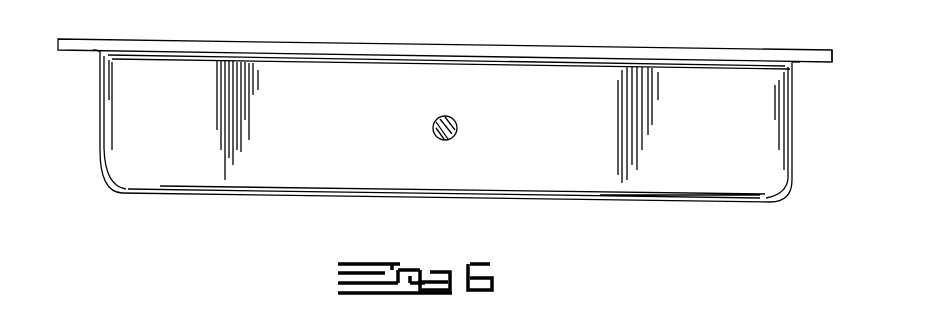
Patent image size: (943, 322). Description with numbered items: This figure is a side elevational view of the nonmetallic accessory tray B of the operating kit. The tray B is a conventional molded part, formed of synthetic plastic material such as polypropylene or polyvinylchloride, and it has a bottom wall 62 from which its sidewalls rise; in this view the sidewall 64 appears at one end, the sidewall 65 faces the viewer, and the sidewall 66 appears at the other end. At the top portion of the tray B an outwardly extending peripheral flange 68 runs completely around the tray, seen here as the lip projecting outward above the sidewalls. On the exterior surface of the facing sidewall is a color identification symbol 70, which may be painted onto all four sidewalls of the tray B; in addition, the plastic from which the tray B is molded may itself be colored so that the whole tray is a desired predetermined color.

The accessory tray B is at (654, 46).
The bottom wall 62 is at (340, 197).
The sidewall 64 is at (100, 105).
The sidewall 65 is at (563, 116).
The sidewall 66 is at (792, 138).
The peripheral flange 68 is at (804, 50).
The color identification symbol 70 is at (433, 129).